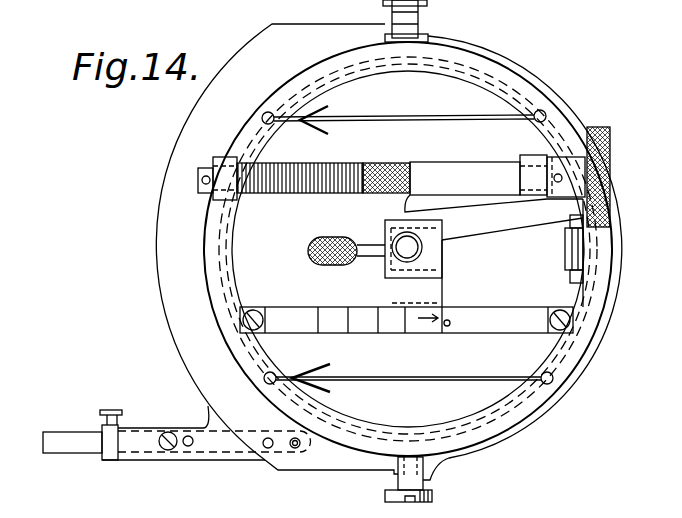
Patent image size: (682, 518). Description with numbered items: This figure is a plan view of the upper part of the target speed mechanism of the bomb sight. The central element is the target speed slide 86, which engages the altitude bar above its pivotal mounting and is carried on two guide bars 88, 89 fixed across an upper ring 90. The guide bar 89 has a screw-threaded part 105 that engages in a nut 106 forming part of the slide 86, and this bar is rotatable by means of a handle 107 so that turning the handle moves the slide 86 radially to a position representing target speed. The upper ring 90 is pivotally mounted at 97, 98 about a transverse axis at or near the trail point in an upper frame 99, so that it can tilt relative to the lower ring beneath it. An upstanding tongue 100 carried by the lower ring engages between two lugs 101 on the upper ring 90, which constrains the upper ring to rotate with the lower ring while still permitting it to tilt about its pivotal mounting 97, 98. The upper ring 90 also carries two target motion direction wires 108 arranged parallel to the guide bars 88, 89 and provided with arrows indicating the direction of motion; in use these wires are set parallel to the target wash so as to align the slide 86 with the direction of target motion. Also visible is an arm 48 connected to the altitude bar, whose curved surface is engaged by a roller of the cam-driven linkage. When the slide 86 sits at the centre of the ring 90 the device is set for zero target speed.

The arm 48 is at (87, 432).
The target speed slide 86 is at (440, 282).
The guide bar 88 is at (285, 318).
The guide bar 89 is at (455, 155).
The upper ring 90 is at (220, 293).
The pivotal mounting 97 is at (420, 20).
The pivotal mounting 98 is at (430, 480).
The upper frame 99 is at (194, 385).
The upstanding tongue 100 is at (571, 248).
The lugs 101 is at (570, 218).
The screw-threaded part 105 is at (290, 194).
The nut 106 is at (383, 163).
The handle 107 is at (592, 127).
The target motion direction wires 108 is at (412, 117).